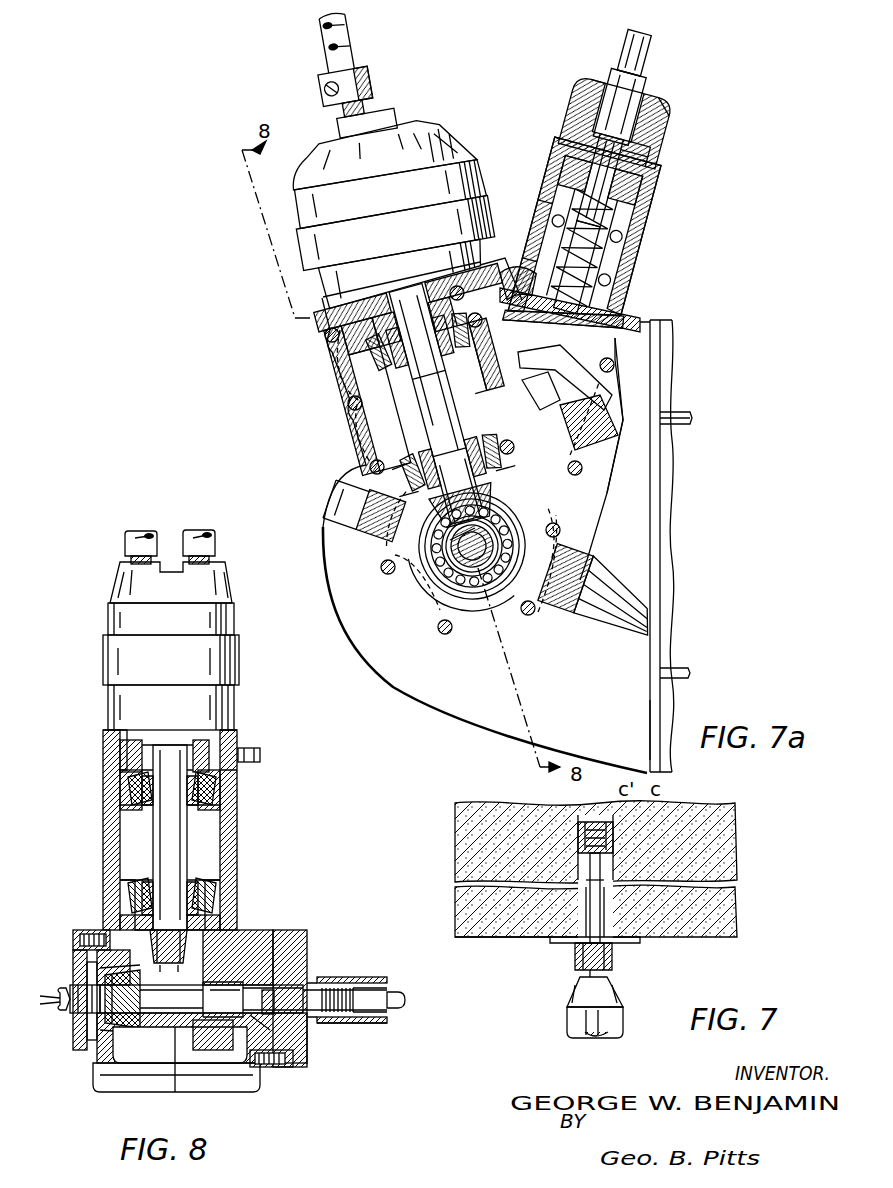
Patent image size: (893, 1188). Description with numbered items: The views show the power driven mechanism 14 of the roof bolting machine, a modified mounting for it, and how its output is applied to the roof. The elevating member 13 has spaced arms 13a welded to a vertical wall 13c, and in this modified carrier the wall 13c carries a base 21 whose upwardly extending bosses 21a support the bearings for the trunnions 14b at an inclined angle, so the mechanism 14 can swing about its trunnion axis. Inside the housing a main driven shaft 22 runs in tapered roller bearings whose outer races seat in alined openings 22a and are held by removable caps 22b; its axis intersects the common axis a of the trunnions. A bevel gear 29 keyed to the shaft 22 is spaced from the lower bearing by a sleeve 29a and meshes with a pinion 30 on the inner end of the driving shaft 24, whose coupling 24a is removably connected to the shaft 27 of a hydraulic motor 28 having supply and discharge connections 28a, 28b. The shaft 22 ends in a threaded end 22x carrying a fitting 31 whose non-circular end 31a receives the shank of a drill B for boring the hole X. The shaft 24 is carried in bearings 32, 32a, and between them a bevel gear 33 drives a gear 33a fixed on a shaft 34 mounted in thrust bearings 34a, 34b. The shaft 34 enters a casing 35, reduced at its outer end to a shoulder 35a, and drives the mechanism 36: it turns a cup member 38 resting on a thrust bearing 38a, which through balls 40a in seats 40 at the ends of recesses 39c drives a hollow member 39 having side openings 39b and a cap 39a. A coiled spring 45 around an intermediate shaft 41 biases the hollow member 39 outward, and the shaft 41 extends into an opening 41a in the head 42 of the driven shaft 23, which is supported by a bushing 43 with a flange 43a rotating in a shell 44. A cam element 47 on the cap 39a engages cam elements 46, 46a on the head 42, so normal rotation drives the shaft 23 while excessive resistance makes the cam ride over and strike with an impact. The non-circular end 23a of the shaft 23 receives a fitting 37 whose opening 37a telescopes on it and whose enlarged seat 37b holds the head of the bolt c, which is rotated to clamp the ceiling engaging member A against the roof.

In FIG. 7A, the elevating member 13 is at (672, 428).
In FIG. 7A, the spaced arms 13a is at (676, 670).
In FIG. 7A, the vertical wall 13c is at (650, 702).
In FIG. 7A, the power driven mechanism 14 is at (380, 596).
In FIG. 8, the power driven mechanism 14 is at (92, 892).
In FIG. 7A, the trunnions 14b is at (575, 566).
In FIG. 7A, the base 21 is at (381, 670).
In FIG. 7A, the bosses 21a is at (342, 532).
In FIG. 7A, the main driven shaft 22 is at (492, 604).
In FIG. 8, the main driven shaft 22 is at (75, 1010).
In FIG. 8, the alined opening 22a is at (73, 950).
In FIG. 8, the removable cap 22b is at (87, 1030).
In FIG. 8, the screw threaded end portion 22x is at (332, 988).
In FIG. 7A, the driven shaft 23 is at (632, 92).
In FIG. 7A, the extended end 23a is at (635, 40).
In FIG. 7, the extended end 23a is at (582, 960).
In FIG. 7A, the shaft 24 is at (402, 432).
In FIG. 8, the shaft 24 is at (170, 860).
In FIG. 7A, the coupling 24a is at (412, 285).
In FIG. 8, the coupling 24a is at (166, 760).
In FIG. 7A, the motor shaft 27 is at (396, 302).
In FIG. 7A, the motor 28 is at (463, 140).
In FIG. 8, the motor 28 is at (238, 648).
In FIG. 7A, the fluid supply connection 28a is at (345, 30).
In FIG. 8, the fluid supply connection 28a is at (138, 540).
In FIG. 7A, the fluid discharge connection 28b is at (347, 58).
In FIG. 8, the fluid discharge connection 28b is at (200, 538).
In FIG. 8, the bevel gear 29 is at (193, 1068).
In FIG. 8, the spacing sleeve 29a is at (150, 1028).
In FIG. 8, the pinion 30 is at (215, 935).
In FIG. 8, the fitting 31 is at (365, 977).
In FIG. 8, the non-circular end portion 31a is at (372, 1023).
In FIG. 7A, the bearing 32 is at (453, 463).
In FIG. 8, the bearing 32 is at (220, 885).
In FIG. 7A, the bearing 32a is at (346, 360).
In FIG. 8, the bearing 32a is at (220, 790).
In FIG. 7A, the bevel gear 33 is at (358, 390).
In FIG. 8, the bevel gear 33 is at (205, 790).
In FIG. 7A, the gear 33a is at (602, 436).
In FIG. 7A, the shaft 34 is at (560, 400).
In FIG. 7A, the inner thrust bearing 34a is at (609, 470).
In FIG. 7A, the outer thrust bearing 34b is at (585, 374).
In FIG. 7A, the casing 35 is at (566, 152).
In FIG. 7A, the shoulder 35a is at (645, 176).
In FIG. 7A, the mechanism 36 is at (660, 287).
In FIG. 7, the fitting 37 is at (605, 980).
In FIG. 7, the through opening 37a is at (578, 950).
In FIG. 7, the seat 37b is at (612, 950).
In FIG. 7A, the cup member 38 is at (650, 314).
In FIG. 7A, the thrust bearing 38a is at (620, 332).
In FIG. 7A, the hollow member 39 is at (605, 332).
In FIG. 7A, the cap 39a is at (628, 236).
In FIG. 7A, the openings 39b is at (630, 282).
In FIG. 7A, the recesses 39c is at (560, 215).
In FIG. 7A, the seats 40 is at (642, 302).
In FIG. 7A, the balls 40a is at (505, 292).
In FIG. 7A, the intermediate shaft 41 is at (602, 180).
In FIG. 7A, the opening 41a is at (648, 166).
In FIG. 7A, the head 42 is at (576, 126).
In FIG. 7A, the bushing 43 is at (611, 80).
In FIG. 7A, the flange 43a is at (645, 165).
In FIG. 7A, the shell 44 is at (600, 84).
In FIG. 7A, the coiled expansion spring 45 is at (620, 252).
In FIG. 7A, the cam element 46 is at (556, 167).
In FIG. 7A, the cam element 46a is at (640, 216).
In FIG. 7A, the cam element 47 is at (560, 176).
In FIG. 7, the ceiling engaging member A is at (560, 940).
In FIG. 8, the drill B is at (405, 1000).
In FIG. 7, the hole X is at (705, 937).
In FIG. 7A, the common axis a is at (442, 562).
In FIG. 7, the bolt c is at (605, 860).